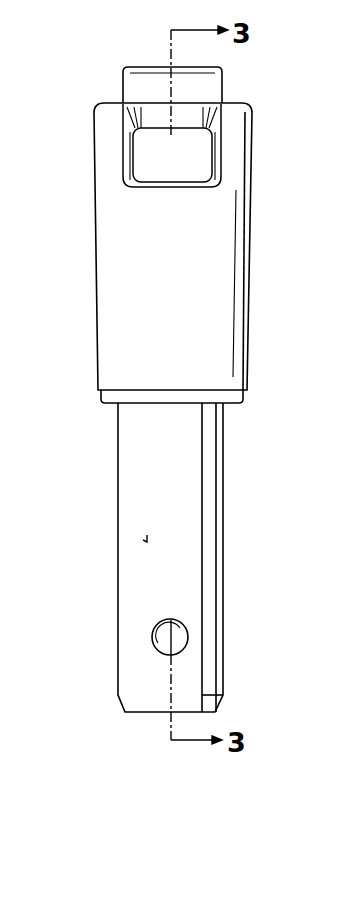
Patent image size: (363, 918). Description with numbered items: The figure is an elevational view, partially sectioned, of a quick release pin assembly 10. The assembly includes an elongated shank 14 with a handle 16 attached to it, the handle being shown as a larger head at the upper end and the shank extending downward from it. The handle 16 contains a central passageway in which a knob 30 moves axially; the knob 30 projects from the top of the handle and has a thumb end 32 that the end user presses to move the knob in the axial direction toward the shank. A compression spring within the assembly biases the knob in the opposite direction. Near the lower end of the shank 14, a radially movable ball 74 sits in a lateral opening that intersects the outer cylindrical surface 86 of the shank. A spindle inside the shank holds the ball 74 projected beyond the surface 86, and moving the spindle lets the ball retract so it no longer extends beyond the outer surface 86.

The quick release pin assembly 10 is at (253, 98).
The shank 14 is at (224, 545).
The handle 16 is at (250, 287).
The knob 30 is at (123, 67).
The thumb end 32 is at (158, 66).
The ball 74 is at (183, 628).
The outer cylindrical surface 86 is at (147, 535).